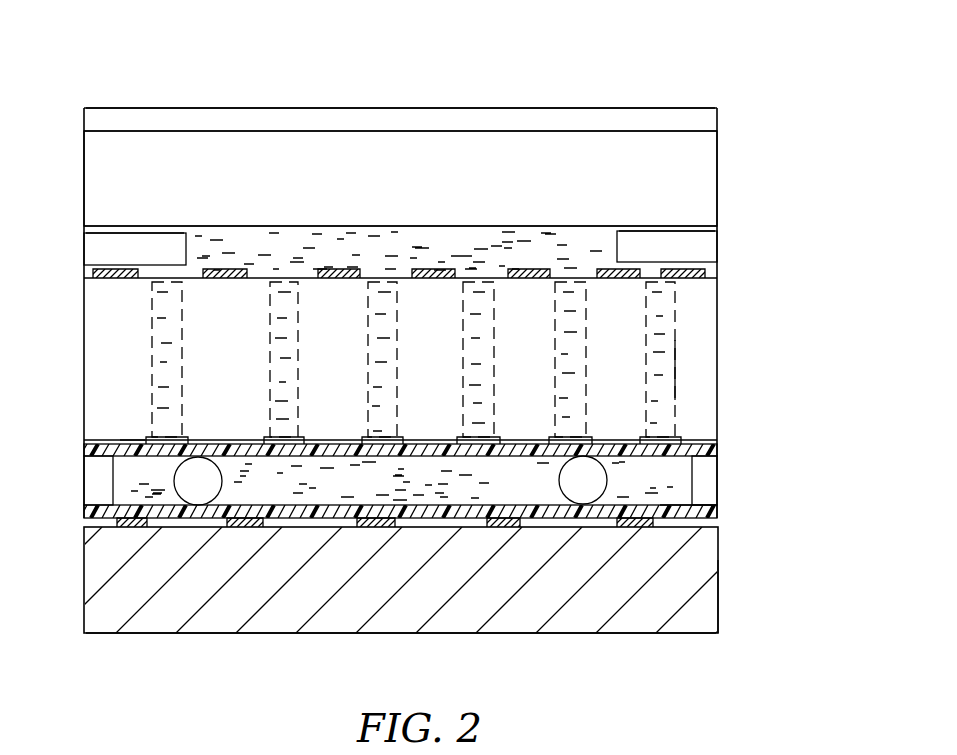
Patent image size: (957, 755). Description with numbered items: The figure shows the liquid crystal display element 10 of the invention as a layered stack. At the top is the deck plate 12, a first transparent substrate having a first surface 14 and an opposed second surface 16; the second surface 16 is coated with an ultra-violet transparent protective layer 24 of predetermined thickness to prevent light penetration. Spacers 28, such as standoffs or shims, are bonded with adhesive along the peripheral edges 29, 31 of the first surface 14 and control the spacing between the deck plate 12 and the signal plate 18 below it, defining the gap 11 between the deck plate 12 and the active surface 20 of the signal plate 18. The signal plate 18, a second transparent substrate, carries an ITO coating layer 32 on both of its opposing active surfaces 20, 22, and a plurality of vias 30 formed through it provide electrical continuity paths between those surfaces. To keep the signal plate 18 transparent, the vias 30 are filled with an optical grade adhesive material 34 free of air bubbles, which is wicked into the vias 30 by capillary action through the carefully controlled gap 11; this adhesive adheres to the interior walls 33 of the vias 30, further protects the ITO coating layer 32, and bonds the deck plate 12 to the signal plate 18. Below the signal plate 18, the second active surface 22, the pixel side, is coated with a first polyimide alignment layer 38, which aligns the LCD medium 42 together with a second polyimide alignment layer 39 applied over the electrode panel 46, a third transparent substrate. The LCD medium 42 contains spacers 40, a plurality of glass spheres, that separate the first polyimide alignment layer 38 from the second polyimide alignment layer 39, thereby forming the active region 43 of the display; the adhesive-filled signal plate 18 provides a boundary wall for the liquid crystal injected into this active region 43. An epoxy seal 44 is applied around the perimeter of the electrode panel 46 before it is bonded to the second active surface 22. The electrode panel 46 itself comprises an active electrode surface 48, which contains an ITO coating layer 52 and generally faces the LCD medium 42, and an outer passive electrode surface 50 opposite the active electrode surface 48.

The liquid crystal display element 10 is at (522, 62).
The gap 11 is at (430, 235).
The deck plate 12 is at (705, 160).
The first surface 14 is at (318, 226).
The second surface 16 is at (400, 108).
The signal plate 18 is at (700, 336).
The active surface 20 is at (280, 275).
The second active surface 22 is at (85, 445).
The ultra-violet transparent protective layer 24 is at (290, 118).
The spacers 28 is at (100, 245).
The peripheral edge 29 is at (133, 231).
The vias 30 is at (328, 440).
The peripheral edge 31 is at (668, 228).
The ITO coating layer 32 is at (100, 275).
The interior walls 33 is at (676, 358).
The optical grade adhesive material 34 is at (583, 232).
The first polyimide alignment layer 38 is at (718, 450).
The second polyimide alignment layer 39 is at (718, 497).
The spacers 40 is at (198, 481).
The LCD medium 42 is at (118, 466).
The active region 43 is at (100, 500).
The epoxy seal 44 is at (84, 482).
The electrode panel 46 is at (718, 628).
The active electrode surface 48 is at (718, 537).
The outer passive electrode surface 50 is at (205, 637).
The ITO coating layer 52 is at (357, 527).